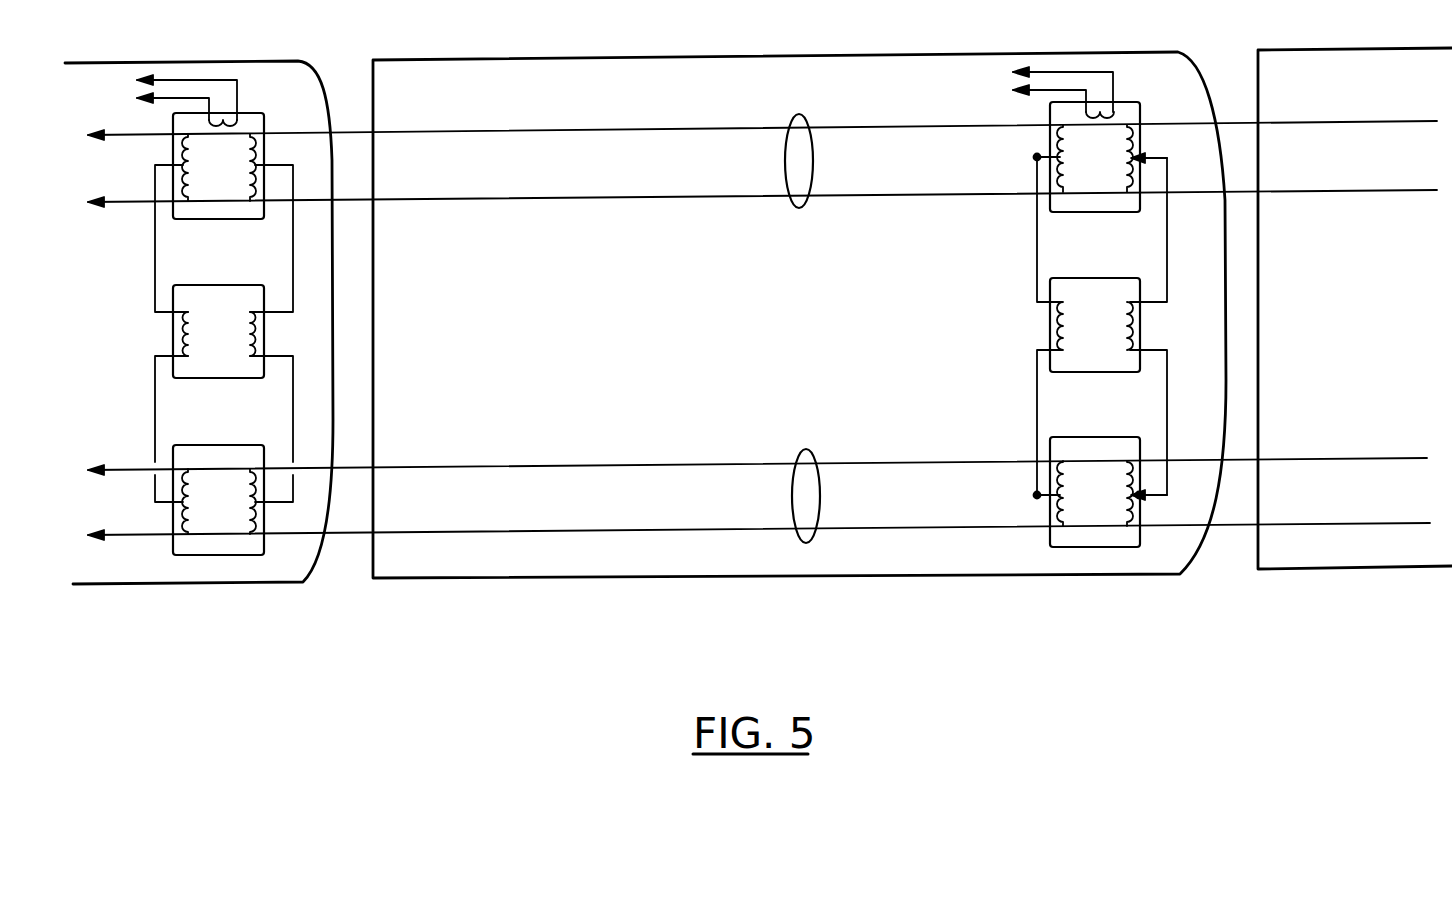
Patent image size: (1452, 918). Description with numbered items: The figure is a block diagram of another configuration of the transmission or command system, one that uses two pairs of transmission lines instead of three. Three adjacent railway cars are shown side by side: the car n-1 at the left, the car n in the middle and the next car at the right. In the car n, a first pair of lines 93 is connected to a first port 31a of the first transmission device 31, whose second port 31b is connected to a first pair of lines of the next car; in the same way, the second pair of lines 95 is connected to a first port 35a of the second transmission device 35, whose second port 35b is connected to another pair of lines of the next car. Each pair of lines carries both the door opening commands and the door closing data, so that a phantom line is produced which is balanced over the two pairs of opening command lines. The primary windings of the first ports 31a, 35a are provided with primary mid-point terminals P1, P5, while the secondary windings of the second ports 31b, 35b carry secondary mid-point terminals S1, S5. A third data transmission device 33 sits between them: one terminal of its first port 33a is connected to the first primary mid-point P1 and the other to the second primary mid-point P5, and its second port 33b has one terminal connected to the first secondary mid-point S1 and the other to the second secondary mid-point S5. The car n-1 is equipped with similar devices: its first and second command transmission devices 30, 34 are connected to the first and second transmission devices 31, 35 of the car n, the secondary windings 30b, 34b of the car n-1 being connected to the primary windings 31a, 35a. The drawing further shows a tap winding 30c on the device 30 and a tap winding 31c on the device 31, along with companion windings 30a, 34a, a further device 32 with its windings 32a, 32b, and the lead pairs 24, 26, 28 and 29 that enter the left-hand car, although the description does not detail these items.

The upper transmission line pair 24 is at (78, 167).
The lower transmission line pair 26 is at (90, 500).
The tap leads of transformer 30 28 is at (134, 88).
The tap leads of transformer 31 29 is at (1002, 78).
The first command transmission device 30 is at (218, 190).
The transformer winding 30a is at (192, 190).
The secondary winding 30b is at (244, 168).
The transformer tap winding 30c is at (224, 124).
The first transmission device 31 is at (1115, 160).
The first port 31a is at (1068, 170).
The second port 31b is at (1120, 166).
The transformer tap winding 31c is at (1115, 117).
The transformer 32 is at (220, 352).
The transformer winding 32a is at (193, 335).
The transformer winding 32b is at (242, 332).
The third data transmission device 33 is at (1097, 348).
The first port 33a is at (1069, 326).
The second port 33b is at (1118, 324).
The second command transmission device 34 is at (231, 513).
The transformer winding 34a is at (193, 500).
The secondary winding 34b is at (242, 492).
The second transmission device 35 is at (1115, 499).
The first port 35a is at (1069, 486).
The second port 35b is at (1118, 484).
The first pair of transmission lines 93 is at (811, 210).
The second pair of transmission lines 95 is at (820, 534).
The primary mid-point terminal P1 is at (1030, 152).
The primary mid-point terminal P5 is at (1030, 494).
The secondary mid-point terminal S1 is at (1153, 148).
The secondary mid-point terminal S5 is at (1152, 506).
The car n−1 n-1 is at (131, 583).
The car n is at (763, 579).